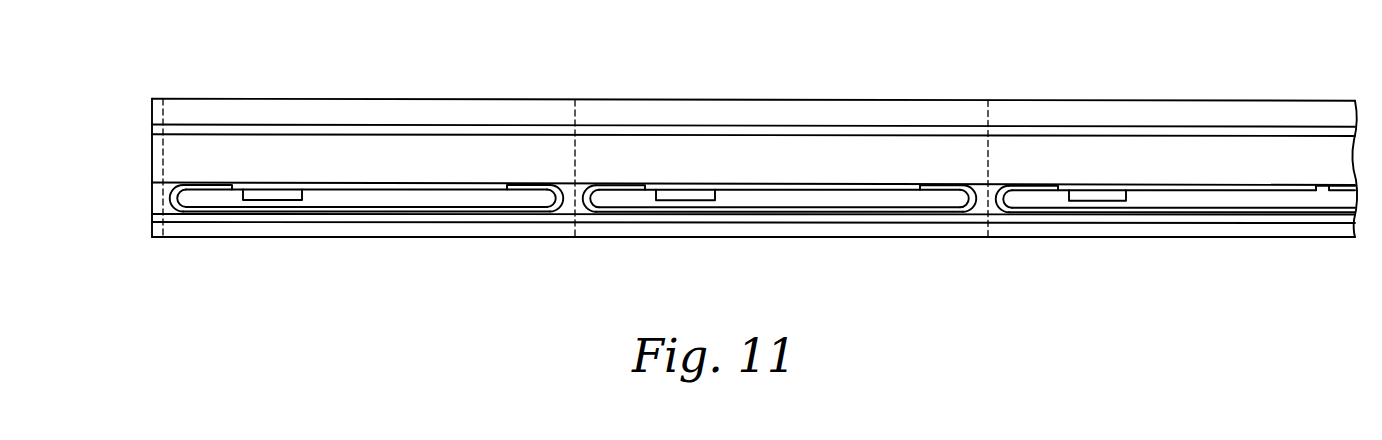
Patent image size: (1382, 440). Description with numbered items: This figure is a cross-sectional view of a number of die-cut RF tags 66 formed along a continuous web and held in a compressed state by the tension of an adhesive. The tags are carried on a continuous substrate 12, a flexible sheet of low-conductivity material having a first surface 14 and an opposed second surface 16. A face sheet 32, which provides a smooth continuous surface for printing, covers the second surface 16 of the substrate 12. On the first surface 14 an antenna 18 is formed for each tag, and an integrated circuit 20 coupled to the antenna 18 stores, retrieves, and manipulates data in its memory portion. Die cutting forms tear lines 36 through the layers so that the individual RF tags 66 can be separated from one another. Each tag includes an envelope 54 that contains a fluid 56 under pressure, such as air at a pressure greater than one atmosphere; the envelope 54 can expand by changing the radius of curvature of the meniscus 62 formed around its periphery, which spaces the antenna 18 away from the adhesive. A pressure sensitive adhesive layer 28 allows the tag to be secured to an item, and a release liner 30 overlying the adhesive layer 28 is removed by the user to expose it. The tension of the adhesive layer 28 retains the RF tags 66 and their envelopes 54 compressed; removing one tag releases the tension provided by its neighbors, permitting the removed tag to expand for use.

The substrate 12 is at (152, 158).
The first surface 14 is at (160, 193).
The second surface 16 is at (177, 134).
The antenna 18 is at (342, 190).
The integrated circuit 20 is at (276, 202).
The adhesive layer 28 is at (152, 219).
The release liner 30 is at (148, 232).
The face sheet 32 is at (152, 112).
The tear lines 36 is at (163, 100).
The envelope 54 is at (467, 215).
The fluid 56 is at (392, 201).
The meniscus 62 is at (171, 213).
The RF tags 66 is at (388, 99).